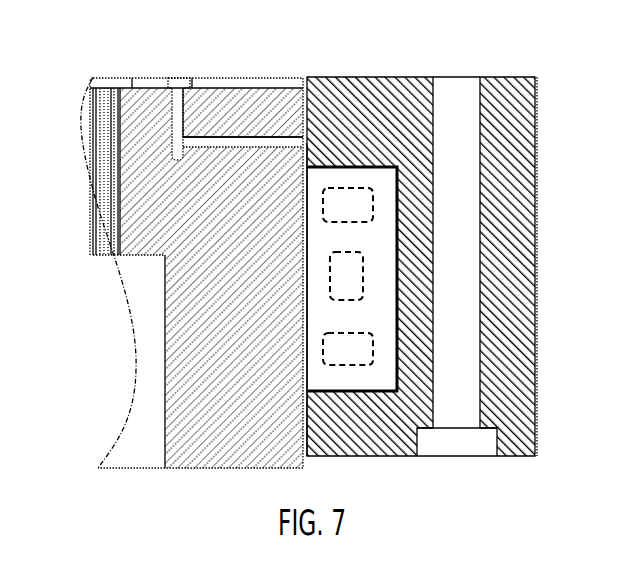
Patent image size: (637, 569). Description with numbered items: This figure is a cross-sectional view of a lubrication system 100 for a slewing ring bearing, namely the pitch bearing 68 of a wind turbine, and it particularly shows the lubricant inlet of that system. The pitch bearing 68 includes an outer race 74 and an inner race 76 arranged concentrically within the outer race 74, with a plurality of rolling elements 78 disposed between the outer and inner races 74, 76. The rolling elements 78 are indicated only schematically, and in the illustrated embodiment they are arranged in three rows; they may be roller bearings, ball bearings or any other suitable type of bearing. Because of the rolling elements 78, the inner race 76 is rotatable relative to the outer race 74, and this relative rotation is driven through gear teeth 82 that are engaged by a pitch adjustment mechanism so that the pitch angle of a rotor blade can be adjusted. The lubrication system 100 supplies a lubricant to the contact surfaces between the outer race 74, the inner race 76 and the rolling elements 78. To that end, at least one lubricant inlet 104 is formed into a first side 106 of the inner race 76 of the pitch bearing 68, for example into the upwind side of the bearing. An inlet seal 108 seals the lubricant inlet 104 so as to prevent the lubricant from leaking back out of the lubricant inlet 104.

The pitch bearing 68 is at (318, 284).
The outer race 74 is at (538, 268).
The inner race 76 is at (257, 452).
The rolling elements 78 is at (353, 368).
The gear teeth 82 is at (92, 130).
The lubrication system 100 is at (240, 112).
The lubricant inlet 104 is at (270, 136).
The first side 106 is at (132, 78).
The inlet seal 108 is at (180, 77).